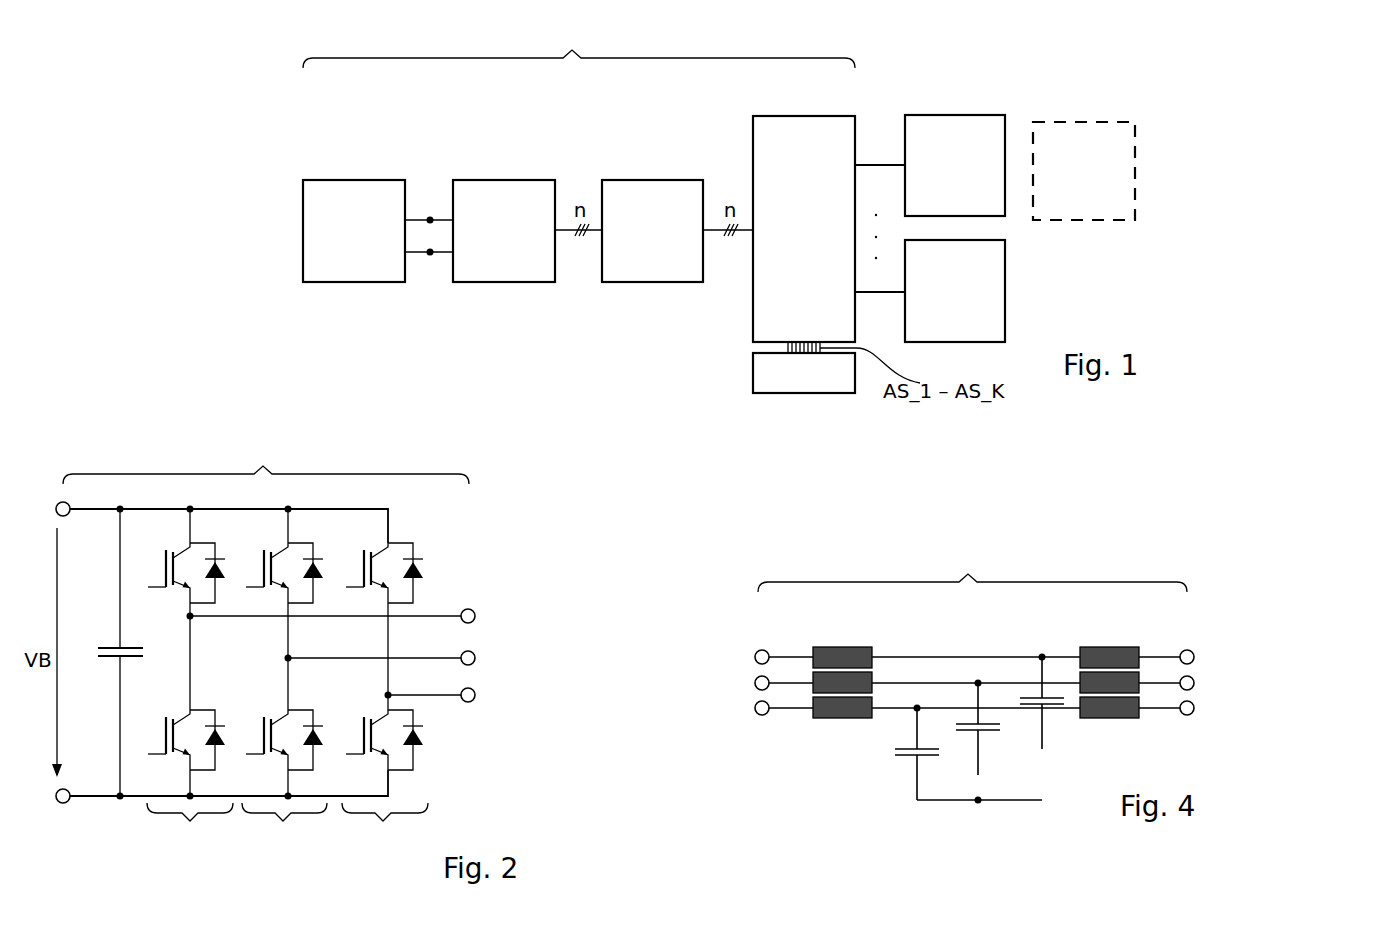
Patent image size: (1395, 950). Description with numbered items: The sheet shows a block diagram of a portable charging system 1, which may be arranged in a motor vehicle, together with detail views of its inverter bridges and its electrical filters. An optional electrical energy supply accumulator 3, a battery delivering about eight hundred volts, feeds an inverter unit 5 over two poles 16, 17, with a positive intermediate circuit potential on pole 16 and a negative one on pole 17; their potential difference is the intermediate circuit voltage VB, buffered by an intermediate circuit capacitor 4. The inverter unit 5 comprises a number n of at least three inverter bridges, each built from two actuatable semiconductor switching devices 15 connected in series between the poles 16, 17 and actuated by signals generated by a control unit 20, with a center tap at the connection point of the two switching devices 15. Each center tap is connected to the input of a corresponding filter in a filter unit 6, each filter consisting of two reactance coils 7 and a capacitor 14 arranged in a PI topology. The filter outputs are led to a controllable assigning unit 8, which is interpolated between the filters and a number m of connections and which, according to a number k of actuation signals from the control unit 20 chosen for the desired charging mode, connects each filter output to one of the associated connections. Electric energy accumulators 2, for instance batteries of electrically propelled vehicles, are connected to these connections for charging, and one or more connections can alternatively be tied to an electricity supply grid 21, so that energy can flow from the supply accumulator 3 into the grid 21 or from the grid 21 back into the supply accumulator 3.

In FIG. 1, the charging system 1 is at (579, 45).
In FIG. 1, the electric energy accumulator 2 is at (948, 175).
In FIG. 1, the electrical energy supply accumulator 3 is at (347, 241).
In FIG. 2, the intermediate circuit capacitor 4 is at (113, 646).
In FIG. 1, the inverter unit 5 is at (497, 241).
In FIG. 2, the inverter unit 5 is at (266, 619).
In FIG. 1, the filter unit 6 is at (645, 241).
In FIG. 4, the filter unit 6 is at (972, 627).
In FIG. 4, the reactance coil 7 is at (848, 647).
In FIG. 1, the controllable assigning unit 8 is at (797, 239).
In FIG. 4, the capacitor 14 is at (904, 758).
In FIG. 2, the semiconductor switching device 15 is at (179, 541).
In FIG. 1, the pole 16 is at (429, 208).
In FIG. 2, the pole 16 is at (56, 503).
In FIG. 1, the pole 17 is at (429, 267).
In FIG. 2, the pole 17 is at (58, 806).
In FIG. 1, the control unit 20 is at (792, 383).
In FIG. 1, the electricity supply grid 21 is at (1072, 181).